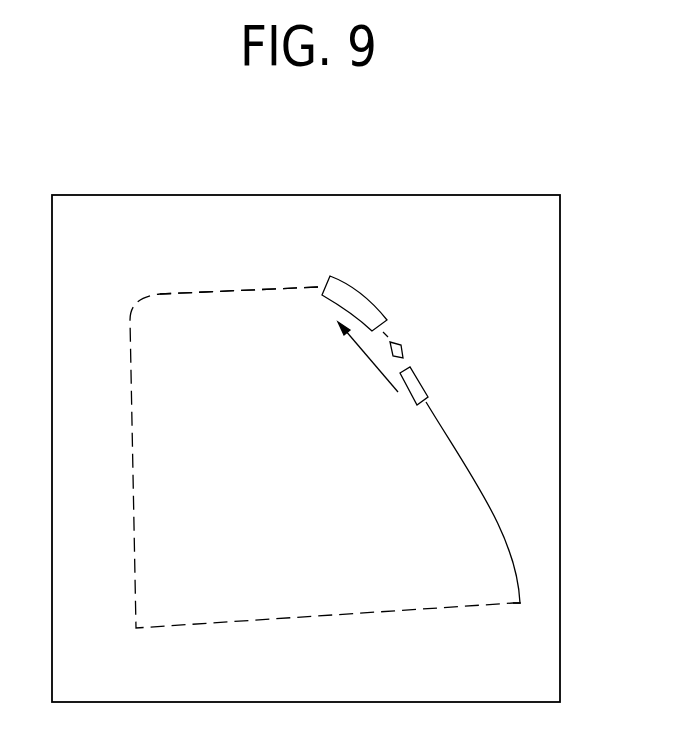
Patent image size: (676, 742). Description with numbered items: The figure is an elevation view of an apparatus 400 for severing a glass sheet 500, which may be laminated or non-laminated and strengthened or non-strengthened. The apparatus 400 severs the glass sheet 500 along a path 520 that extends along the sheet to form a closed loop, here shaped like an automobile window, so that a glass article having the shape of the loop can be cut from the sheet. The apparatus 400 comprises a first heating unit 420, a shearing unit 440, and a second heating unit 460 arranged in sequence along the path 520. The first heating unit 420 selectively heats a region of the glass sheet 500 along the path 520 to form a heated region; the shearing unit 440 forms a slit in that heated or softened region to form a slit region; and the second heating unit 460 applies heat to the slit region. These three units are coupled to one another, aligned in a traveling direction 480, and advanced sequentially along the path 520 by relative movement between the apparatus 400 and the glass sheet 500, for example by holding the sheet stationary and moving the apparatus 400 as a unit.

The apparatus for severing a glass sheet 400 is at (410, 314).
The first heating unit 420 is at (365, 290).
The shearing unit 440 is at (402, 345).
The second heating unit 460 is at (424, 380).
The traveling direction 480 is at (370, 352).
The glass sheet 500 is at (284, 510).
The path 520 is at (262, 290).